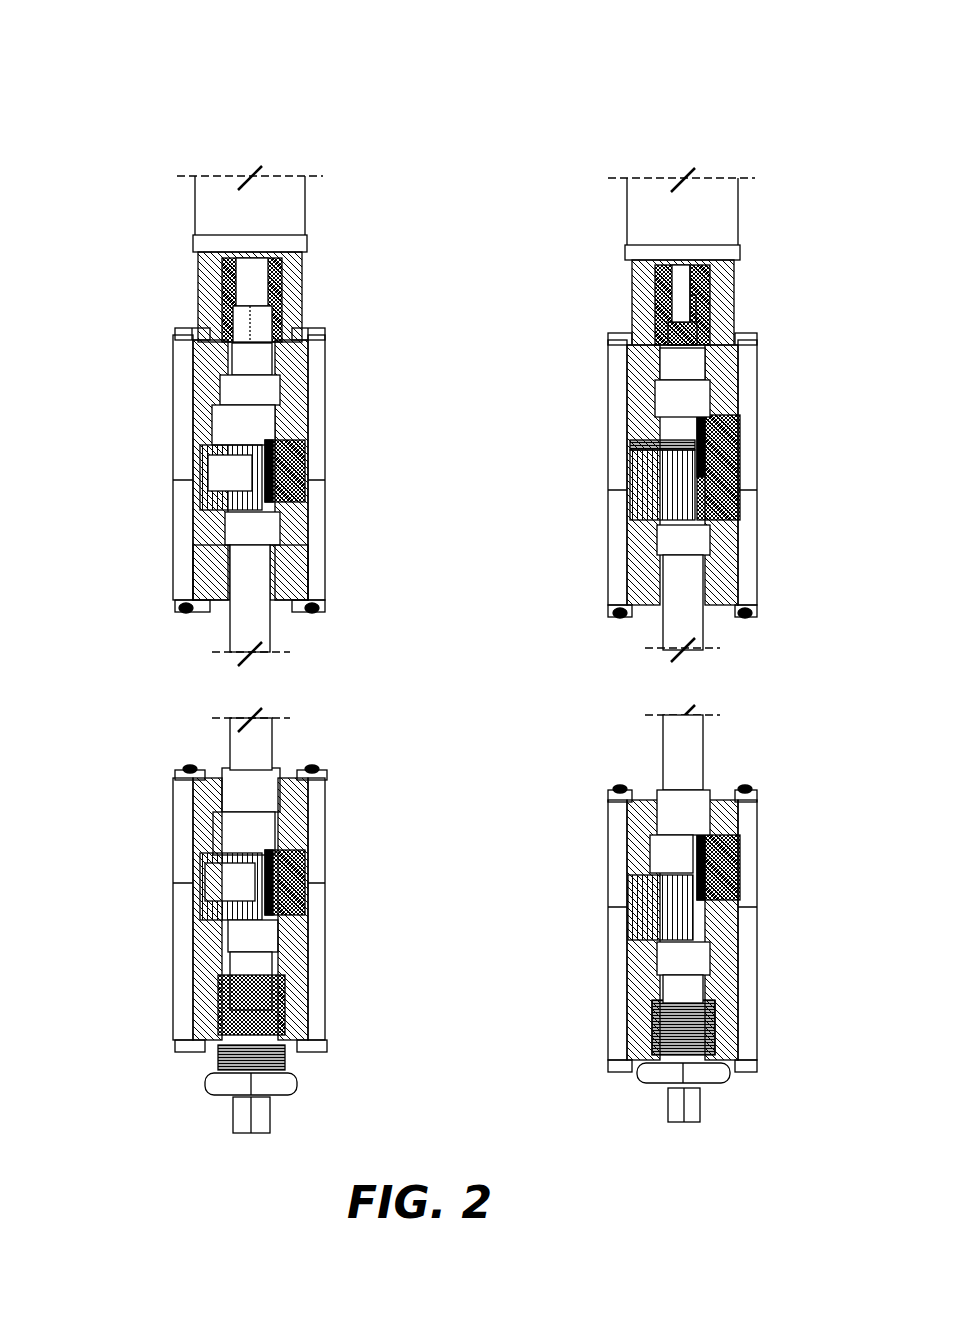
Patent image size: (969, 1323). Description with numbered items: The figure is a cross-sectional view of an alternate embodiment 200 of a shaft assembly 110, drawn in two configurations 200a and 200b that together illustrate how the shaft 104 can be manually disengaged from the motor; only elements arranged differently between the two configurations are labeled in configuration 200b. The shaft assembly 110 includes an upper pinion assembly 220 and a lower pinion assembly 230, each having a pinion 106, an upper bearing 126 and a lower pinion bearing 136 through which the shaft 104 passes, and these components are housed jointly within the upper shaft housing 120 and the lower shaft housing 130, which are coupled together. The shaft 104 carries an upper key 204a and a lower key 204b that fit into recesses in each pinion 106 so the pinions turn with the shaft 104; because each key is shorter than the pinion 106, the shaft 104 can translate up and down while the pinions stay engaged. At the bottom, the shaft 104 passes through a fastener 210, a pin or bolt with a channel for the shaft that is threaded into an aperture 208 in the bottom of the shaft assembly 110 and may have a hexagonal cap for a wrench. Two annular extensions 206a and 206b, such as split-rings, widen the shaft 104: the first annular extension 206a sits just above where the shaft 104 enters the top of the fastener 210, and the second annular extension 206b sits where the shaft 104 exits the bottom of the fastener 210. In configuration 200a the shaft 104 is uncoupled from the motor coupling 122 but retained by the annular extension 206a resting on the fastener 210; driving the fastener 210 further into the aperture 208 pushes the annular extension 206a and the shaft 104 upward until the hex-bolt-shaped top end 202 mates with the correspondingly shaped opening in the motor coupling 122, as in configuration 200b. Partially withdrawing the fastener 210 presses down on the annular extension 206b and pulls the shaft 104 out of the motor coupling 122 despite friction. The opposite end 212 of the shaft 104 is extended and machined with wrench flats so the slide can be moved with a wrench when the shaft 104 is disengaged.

The embodiment 200 is at (818, 72).
The first configuration 200a is at (355, 205).
The second configuration 200b is at (785, 205).
The shaft assembly 110 is at (195, 695).
The upper shaft housing 120 is at (300, 305).
The motor coupling 122 is at (280, 290).
The top end of the shaft 202 is at (258, 356).
The upper pinion assembly 220 is at (150, 378).
The lower pinion assembly 230 is at (150, 883).
The upper bearing 126 is at (246, 615).
The pinion 106 is at (231, 682).
The upper key 204a is at (275, 490).
The lower key 204b is at (280, 885).
The lower pinion bearing 136 is at (252, 732).
The lower shaft housing 130 is at (300, 545).
The shaft 104 is at (251, 777).
The annular extension 206a is at (275, 965).
The annular extension 206b is at (272, 1097).
The aperture 208 is at (210, 1052).
The fastener 210 is at (107, 1150).
The end of the shaft 212 is at (268, 1129).